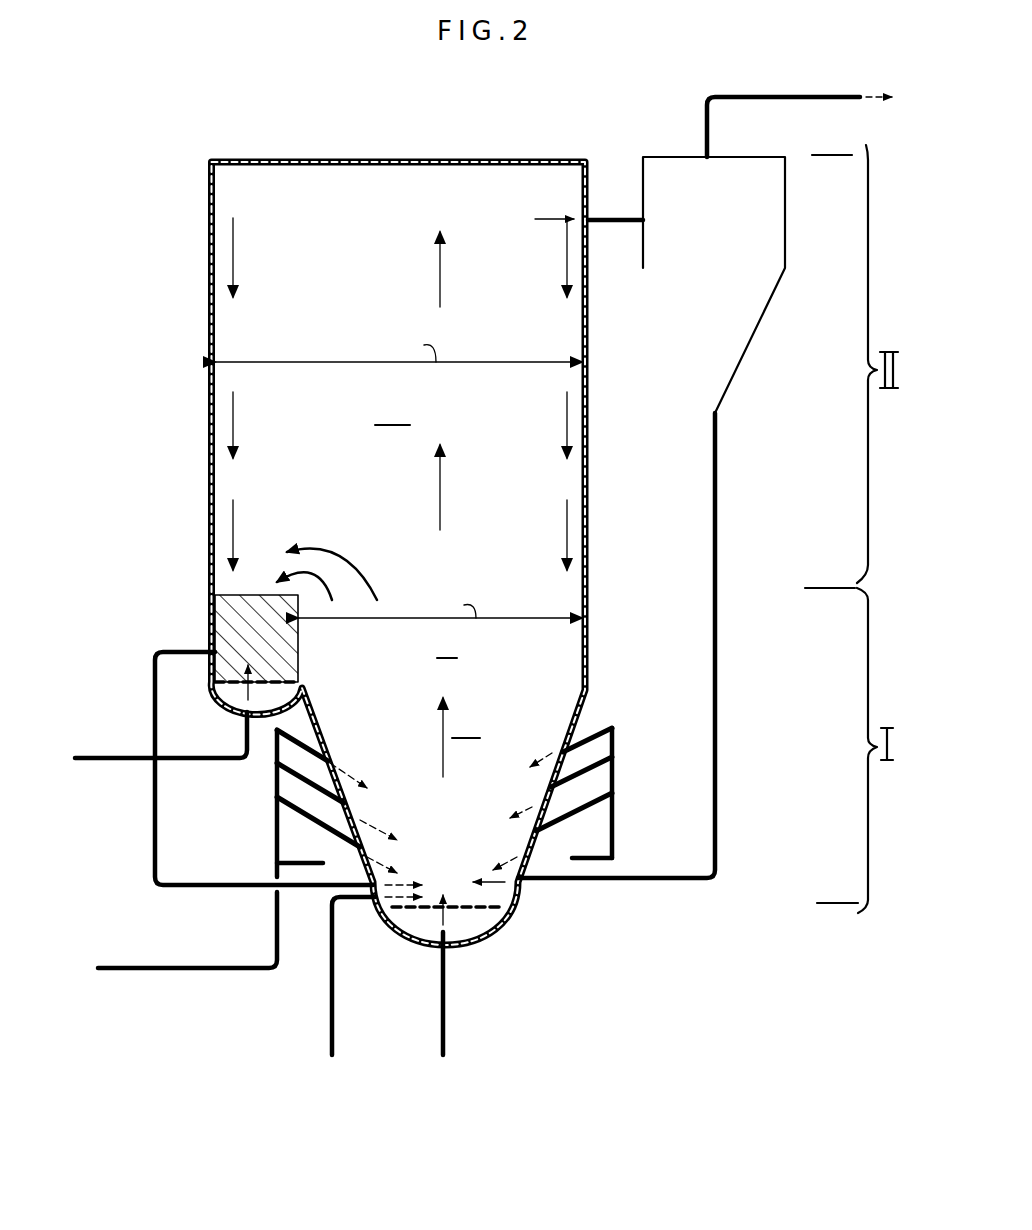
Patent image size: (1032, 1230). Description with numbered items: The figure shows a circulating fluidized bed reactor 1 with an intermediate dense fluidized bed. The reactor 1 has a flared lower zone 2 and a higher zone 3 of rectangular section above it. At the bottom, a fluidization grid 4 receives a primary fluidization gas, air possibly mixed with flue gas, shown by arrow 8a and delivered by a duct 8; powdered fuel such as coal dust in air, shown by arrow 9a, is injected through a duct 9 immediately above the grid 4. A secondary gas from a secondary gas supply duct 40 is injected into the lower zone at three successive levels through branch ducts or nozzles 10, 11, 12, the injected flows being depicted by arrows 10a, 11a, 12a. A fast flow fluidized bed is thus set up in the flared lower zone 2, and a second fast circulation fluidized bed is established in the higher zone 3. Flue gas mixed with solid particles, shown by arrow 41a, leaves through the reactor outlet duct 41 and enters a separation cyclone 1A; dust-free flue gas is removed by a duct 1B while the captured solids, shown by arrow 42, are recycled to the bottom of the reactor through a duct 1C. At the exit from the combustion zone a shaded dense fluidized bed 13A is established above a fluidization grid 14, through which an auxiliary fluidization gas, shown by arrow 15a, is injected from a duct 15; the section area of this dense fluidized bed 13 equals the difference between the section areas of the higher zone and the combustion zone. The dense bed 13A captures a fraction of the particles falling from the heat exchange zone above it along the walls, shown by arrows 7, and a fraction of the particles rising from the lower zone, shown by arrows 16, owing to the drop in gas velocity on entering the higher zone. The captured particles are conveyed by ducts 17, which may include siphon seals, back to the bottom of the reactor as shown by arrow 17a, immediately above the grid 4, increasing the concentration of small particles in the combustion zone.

The reactor 1 is at (606, 567).
The separation cyclone 1A is at (757, 323).
The duct 1B is at (817, 97).
The duct 1C is at (720, 590).
The flared lower zone 2 is at (572, 717).
The higher zone 3 is at (208, 262).
The fluidization grid 4 is at (415, 910).
The arrows 7 is at (235, 418).
The duct 8 is at (447, 1013).
The arrow 8a is at (447, 915).
The duct 9 is at (330, 1000).
The arrow 9a is at (403, 907).
The branch duct or nozzle 10 is at (592, 815).
The arrow 10a is at (497, 862).
The branch duct or nozzle 11 is at (595, 775).
The arrow 11a is at (517, 803).
The branch duct or nozzle 12 is at (612, 730).
The arrow 12a is at (537, 753).
The dense fluidized bed 13 is at (250, 607).
The dense fluidized bed 13A is at (303, 650).
The fluidization grid 14 is at (225, 696).
The duct 15 is at (202, 760).
The arrow 15a is at (300, 700).
The arrows 16 is at (330, 597).
The ducts 17 is at (155, 812).
The arrow 17a is at (410, 882).
The secondary gas supply duct 40 is at (140, 972).
The reactor outlet duct 41 is at (610, 215).
The arrow 41a is at (553, 219).
The arrow 42 is at (497, 885).